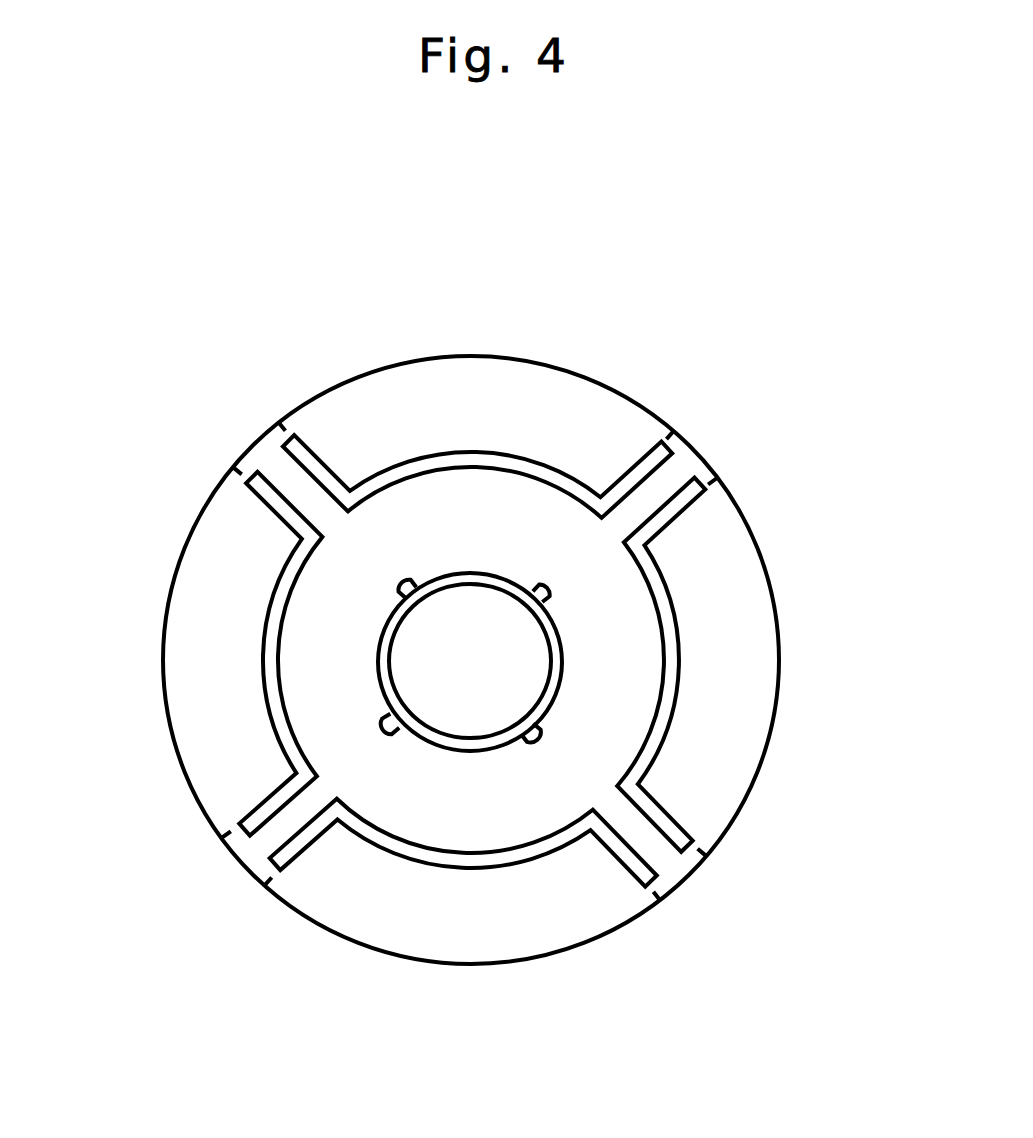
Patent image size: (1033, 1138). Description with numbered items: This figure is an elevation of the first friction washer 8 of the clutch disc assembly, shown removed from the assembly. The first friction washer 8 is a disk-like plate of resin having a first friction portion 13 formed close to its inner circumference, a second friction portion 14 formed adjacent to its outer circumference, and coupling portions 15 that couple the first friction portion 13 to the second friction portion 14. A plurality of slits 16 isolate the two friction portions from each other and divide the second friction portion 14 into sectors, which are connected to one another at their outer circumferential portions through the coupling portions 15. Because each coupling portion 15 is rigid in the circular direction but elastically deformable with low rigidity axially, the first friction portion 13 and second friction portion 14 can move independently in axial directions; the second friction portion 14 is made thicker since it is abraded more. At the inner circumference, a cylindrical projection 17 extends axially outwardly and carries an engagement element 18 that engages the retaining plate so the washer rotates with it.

The first friction washer 8 is at (653, 263).
The first friction portion 13 is at (608, 687).
The second friction portion 14 is at (722, 578).
The coupling portion 15 is at (260, 457).
The slits 16 is at (447, 458).
The cylindrical projection 17 is at (460, 574).
The engagement element 18 is at (548, 598).